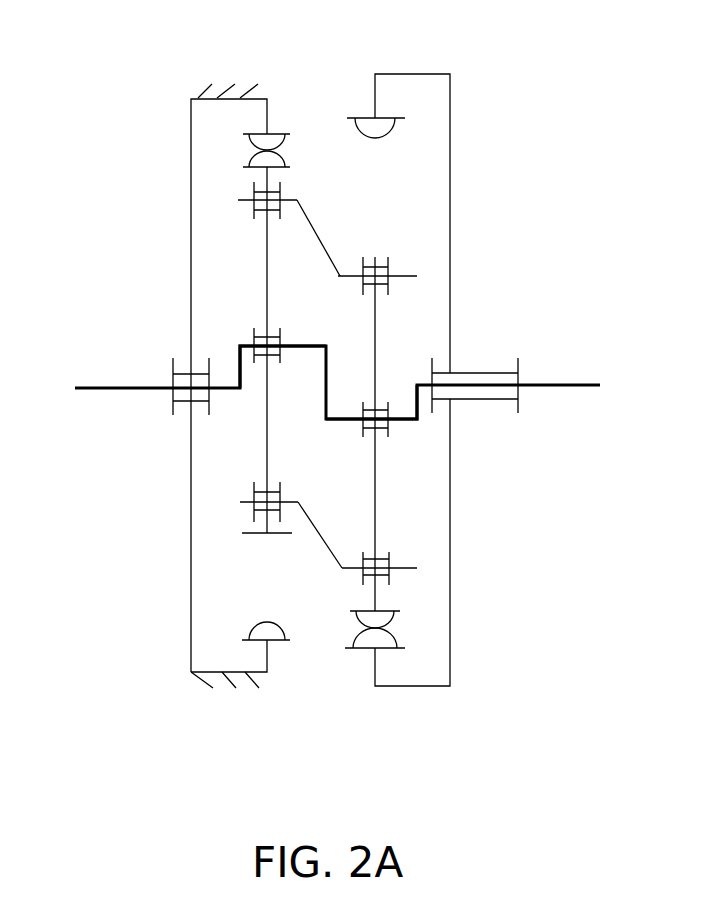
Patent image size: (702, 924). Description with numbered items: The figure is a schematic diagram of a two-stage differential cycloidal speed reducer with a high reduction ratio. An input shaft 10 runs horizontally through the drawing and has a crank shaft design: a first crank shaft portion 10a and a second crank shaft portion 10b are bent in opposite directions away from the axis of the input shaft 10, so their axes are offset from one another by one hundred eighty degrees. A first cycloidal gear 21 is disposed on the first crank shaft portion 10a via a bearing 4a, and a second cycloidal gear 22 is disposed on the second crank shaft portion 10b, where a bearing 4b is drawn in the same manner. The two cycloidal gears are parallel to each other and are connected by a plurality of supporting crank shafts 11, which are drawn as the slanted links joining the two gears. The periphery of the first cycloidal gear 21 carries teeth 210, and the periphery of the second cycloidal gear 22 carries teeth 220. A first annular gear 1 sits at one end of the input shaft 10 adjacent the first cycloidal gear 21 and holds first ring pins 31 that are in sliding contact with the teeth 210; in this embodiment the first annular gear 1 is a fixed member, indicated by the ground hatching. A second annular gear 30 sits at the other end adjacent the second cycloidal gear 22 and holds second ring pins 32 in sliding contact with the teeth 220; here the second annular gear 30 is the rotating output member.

The first annular gear 1 is at (190, 200).
The second annular gear 30 is at (450, 147).
The first ring pins 31 is at (255, 140).
The teeth 210 is at (255, 160).
The first cycloidal gear 21 is at (267, 272).
The second cycloidal gear 22 is at (375, 318).
The teeth 220 is at (390, 617).
The second ring pins 32 is at (385, 638).
The supporting crank shafts 11 is at (308, 212).
The input shaft 10 is at (88, 388).
The first crank shaft portion 10a is at (240, 343).
The second crank shaft portion 10b is at (405, 421).
The bearing 4a is at (263, 362).
The bearing 4b is at (383, 437).